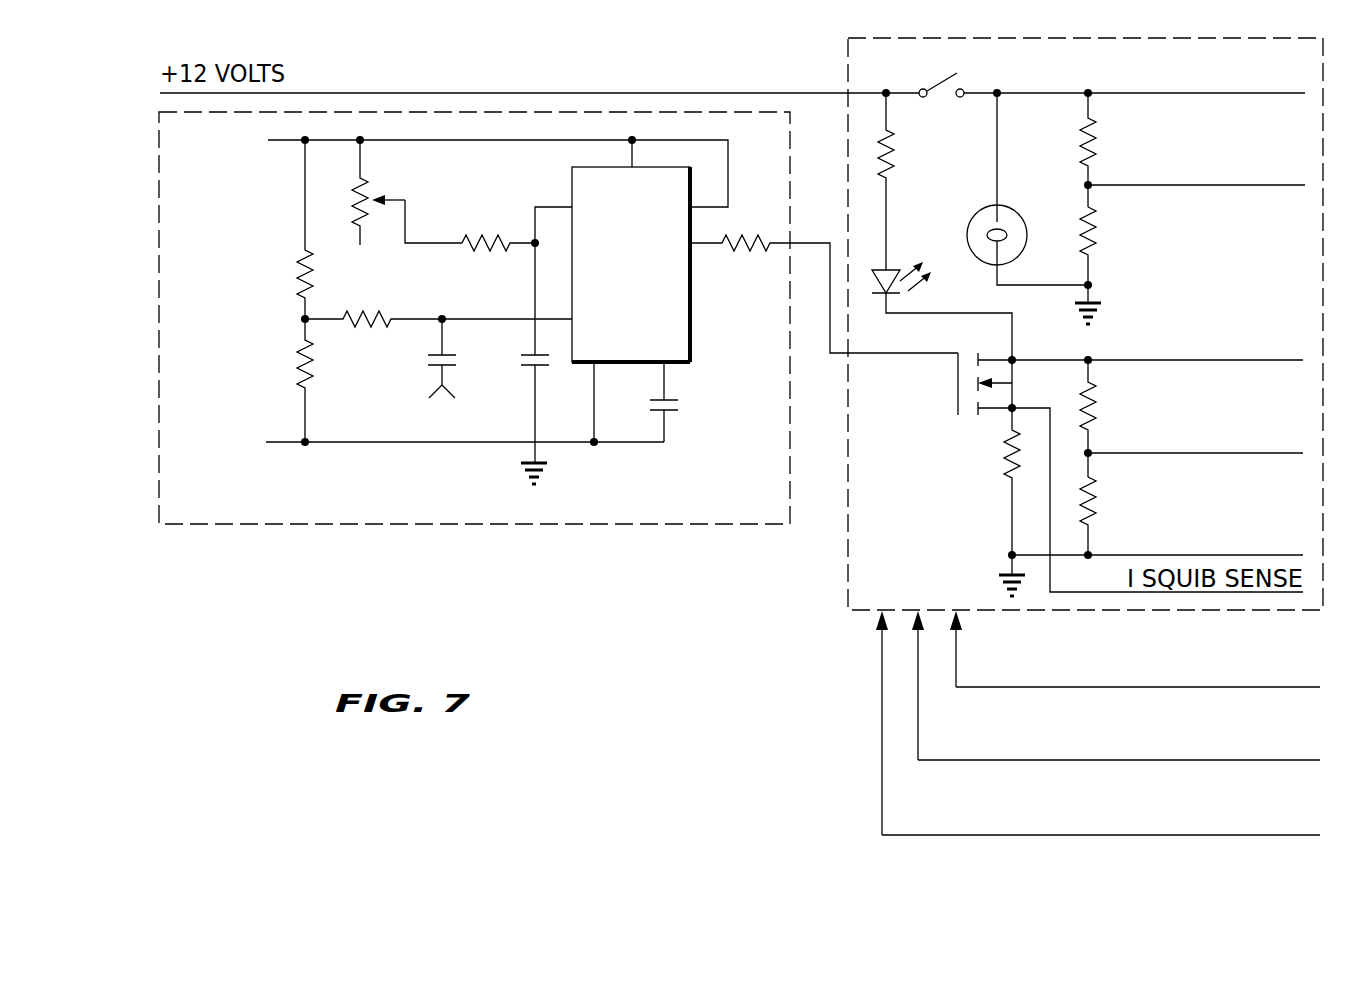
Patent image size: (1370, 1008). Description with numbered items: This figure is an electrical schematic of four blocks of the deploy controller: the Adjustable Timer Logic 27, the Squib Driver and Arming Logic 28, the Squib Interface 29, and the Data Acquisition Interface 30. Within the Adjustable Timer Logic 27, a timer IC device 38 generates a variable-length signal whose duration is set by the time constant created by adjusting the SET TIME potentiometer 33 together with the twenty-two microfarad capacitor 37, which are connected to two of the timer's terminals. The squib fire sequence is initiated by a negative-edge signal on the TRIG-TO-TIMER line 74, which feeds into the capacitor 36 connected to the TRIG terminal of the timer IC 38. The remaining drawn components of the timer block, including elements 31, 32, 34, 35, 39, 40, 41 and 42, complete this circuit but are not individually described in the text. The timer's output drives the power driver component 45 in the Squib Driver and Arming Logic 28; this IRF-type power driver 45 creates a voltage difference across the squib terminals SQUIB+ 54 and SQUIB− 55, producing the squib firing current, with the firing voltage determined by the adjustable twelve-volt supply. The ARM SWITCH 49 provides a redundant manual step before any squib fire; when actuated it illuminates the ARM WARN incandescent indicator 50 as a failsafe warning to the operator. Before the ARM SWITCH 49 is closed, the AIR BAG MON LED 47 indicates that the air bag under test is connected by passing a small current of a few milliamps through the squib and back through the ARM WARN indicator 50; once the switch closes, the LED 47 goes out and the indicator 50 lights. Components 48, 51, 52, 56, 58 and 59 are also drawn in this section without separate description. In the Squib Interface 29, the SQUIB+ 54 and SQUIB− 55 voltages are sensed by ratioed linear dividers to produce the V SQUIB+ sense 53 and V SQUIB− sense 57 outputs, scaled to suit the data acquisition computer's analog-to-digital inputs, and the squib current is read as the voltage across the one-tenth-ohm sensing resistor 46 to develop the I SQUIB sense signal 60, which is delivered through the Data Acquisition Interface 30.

The Adjustable Timer Logic 27 is at (723, 525).
The Squib Driver and Arming Logic 28 is at (1022, 687).
The Squib Interface 29 is at (1012, 760).
The Data Acquisition Interface 30 is at (983, 835).
The 2.2K resistor 31 is at (302, 345).
The 2.2K resistor 32 is at (302, 255).
The SET TIME potentiometer 33 is at (365, 200).
The 100 ohm resistor 34 is at (470, 243).
The 47K resistor 35 is at (362, 327).
The capacitor 36 is at (452, 356).
The 22 μf capacitor 37 is at (540, 370).
The 555 timer IC device 38 is at (690, 330).
The control capacitor 39 is at (680, 406).
The 33 ohm output resistor 40 is at (752, 237).
The +8 volt supply line 41 is at (283, 142).
The ground line 42 is at (415, 445).
The power driver component 45 is at (970, 420).
The 0.1 ohm sensing resistor 46 is at (1008, 472).
The AIR BAG MON LED 47 is at (900, 285).
The 4.7K resistor 48 is at (882, 152).
The ARM SWITCH 49 is at (950, 78).
The ARM WARN incandescent indicator 50 is at (1023, 228).
The 10K resistor 51 is at (1088, 122).
The 2.2K resistor 52 is at (1095, 250).
The V SQUIB+ sense output voltage 53 is at (1205, 187).
The SQUIB+ terminal 54 is at (1190, 95).
The SQUIB− terminal 55 is at (1190, 358).
The 10K resistor 56 is at (1082, 408).
The V SQUIB− sense output voltage 57 is at (1200, 456).
The 2.2K resistor 58 is at (1093, 520).
The ground line 59 is at (1192, 556).
The I SQUIB sense signal 60 is at (1065, 593).
The TRIG-TO-TIMER line 74 is at (432, 393).